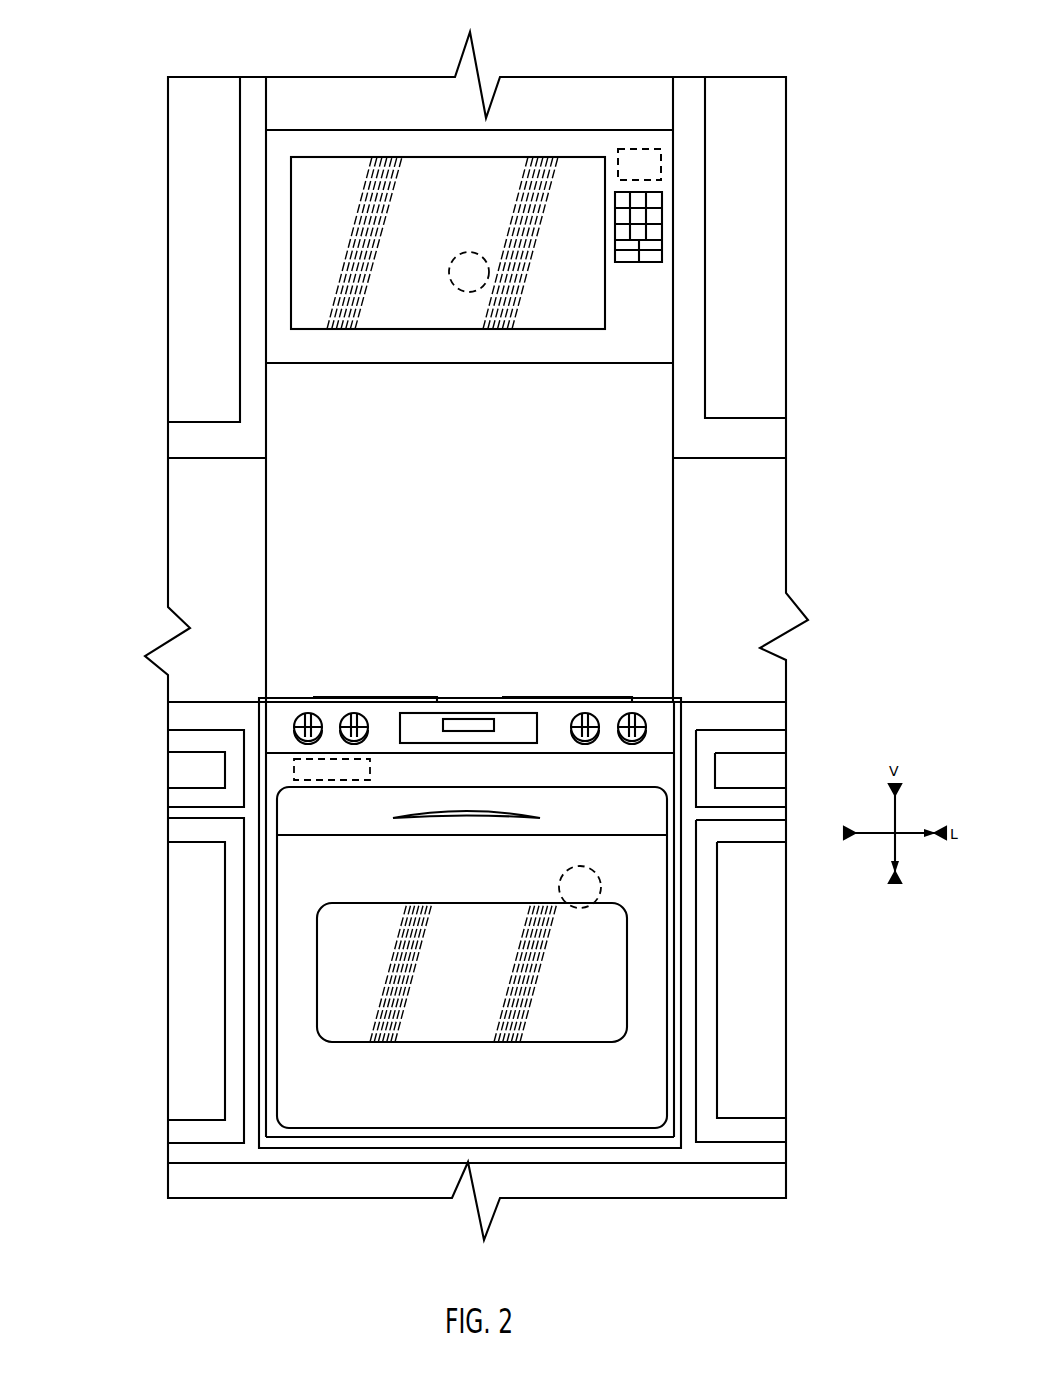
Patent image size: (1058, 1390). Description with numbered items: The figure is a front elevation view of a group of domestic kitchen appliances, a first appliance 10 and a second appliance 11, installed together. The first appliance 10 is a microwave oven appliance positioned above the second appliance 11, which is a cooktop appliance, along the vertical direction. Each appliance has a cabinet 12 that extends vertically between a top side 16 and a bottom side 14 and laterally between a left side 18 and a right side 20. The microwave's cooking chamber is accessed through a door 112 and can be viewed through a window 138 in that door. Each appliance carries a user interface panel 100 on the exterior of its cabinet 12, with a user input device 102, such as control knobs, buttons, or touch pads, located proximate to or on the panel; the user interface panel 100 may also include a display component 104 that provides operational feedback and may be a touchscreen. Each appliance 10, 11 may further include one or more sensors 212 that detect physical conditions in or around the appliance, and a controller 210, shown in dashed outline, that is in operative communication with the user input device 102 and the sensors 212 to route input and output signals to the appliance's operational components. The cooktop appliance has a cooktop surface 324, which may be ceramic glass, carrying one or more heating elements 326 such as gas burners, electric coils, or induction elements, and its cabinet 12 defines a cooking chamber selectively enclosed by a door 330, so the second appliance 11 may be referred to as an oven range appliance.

The first appliance 10 is at (120, 48).
The second appliance 11 is at (247, 911).
The cabinet 12 is at (662, 356).
The bottom side 14 is at (533, 365).
The top side 16 is at (388, 125).
The left side 18 is at (262, 280).
The right side 20 is at (680, 291).
The user interface panel 100 is at (655, 334).
The user input device 102 is at (661, 230).
The display component 104 is at (392, 707).
The door 112 is at (637, 138).
The window 138 is at (314, 236).
The controller 210 is at (661, 165).
The sensor 212 is at (470, 252).
The cooktop surface 324 is at (281, 696).
The heating element 326 is at (520, 697).
The door 330 is at (648, 988).